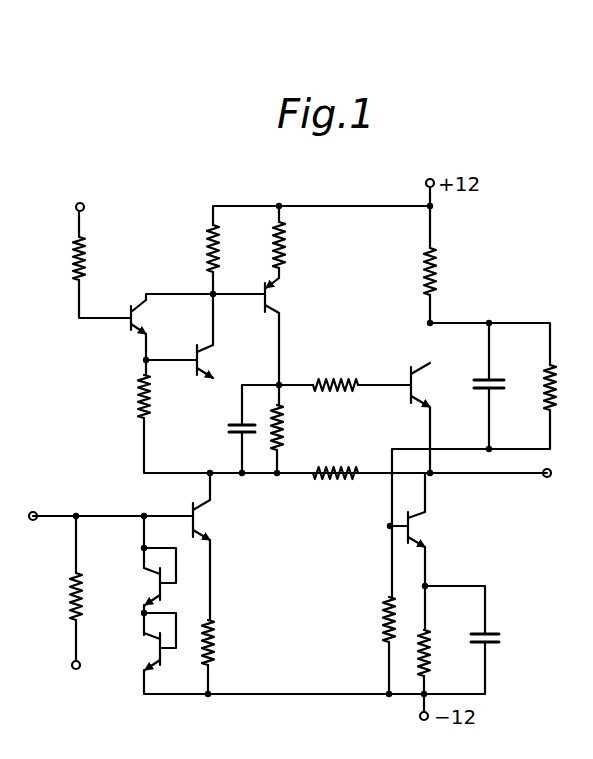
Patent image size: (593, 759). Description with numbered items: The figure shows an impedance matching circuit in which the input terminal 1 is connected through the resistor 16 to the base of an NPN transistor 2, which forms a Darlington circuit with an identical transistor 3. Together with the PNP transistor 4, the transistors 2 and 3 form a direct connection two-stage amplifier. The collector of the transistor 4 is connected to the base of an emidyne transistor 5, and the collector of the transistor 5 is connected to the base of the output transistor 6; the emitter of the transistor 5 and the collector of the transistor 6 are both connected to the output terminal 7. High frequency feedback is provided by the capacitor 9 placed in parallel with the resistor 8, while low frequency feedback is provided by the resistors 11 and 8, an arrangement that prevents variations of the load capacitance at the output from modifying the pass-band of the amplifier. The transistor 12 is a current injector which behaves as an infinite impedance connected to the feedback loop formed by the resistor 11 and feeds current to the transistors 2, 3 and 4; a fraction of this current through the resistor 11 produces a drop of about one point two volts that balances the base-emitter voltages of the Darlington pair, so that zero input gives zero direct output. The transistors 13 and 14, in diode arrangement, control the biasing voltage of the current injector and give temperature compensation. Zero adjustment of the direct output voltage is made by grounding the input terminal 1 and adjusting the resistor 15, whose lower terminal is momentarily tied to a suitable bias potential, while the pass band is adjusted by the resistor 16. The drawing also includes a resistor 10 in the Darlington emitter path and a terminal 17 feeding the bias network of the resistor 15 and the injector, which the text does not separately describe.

The input terminal 1 is at (92, 203).
The NPN transistor 2 is at (130, 332).
The transistor 3 is at (203, 358).
The PNP transistor 4 is at (272, 296).
The emidyne transistor 5 is at (416, 380).
The output transistor 6 is at (414, 525).
The output terminal 7 is at (546, 478).
The resistor 8 is at (289, 414).
The capacitor 9 is at (234, 432).
The resistor 10 is at (139, 392).
The resistor 11 is at (319, 478).
The current injector transistor 12 is at (200, 518).
The transistor in diode arrangement 13 is at (154, 586).
The transistor in diode arrangement 14 is at (154, 651).
The resistor 15 is at (71, 600).
The resistor 16 is at (86, 265).
The control input terminal 17 is at (46, 506).